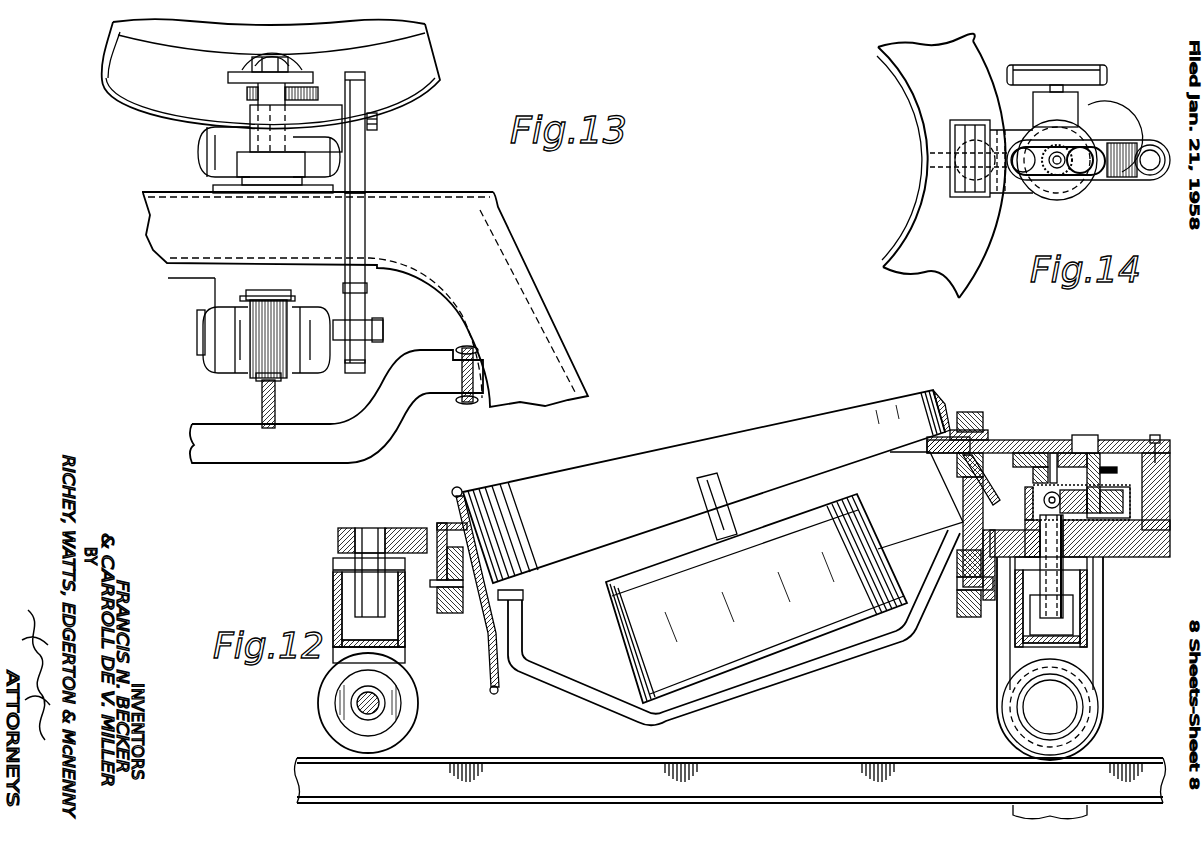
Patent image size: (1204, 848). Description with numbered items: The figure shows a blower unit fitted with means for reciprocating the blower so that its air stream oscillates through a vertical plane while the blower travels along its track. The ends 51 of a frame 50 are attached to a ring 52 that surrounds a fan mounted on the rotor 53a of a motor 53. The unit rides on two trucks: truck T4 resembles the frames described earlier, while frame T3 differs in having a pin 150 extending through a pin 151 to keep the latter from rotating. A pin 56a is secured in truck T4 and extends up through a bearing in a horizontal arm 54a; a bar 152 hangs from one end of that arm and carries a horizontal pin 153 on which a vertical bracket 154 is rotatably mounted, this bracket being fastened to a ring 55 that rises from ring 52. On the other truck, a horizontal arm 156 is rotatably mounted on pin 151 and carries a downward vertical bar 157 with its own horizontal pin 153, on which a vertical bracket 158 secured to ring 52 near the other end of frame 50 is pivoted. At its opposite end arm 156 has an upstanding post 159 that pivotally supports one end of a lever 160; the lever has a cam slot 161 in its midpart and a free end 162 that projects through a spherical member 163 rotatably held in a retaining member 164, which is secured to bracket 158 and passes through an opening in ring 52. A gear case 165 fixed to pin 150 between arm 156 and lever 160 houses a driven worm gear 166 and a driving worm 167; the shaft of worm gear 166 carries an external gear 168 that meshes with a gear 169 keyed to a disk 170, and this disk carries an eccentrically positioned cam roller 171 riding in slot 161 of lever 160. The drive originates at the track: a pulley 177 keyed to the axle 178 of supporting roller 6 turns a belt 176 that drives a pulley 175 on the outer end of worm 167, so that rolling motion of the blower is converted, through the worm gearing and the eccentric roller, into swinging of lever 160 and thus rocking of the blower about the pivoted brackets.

In FIG. 13, the supporting roller 6 is at (262, 386).
In FIG. 12, the frame 50 is at (618, 712).
In FIG. 12, the ends of frame 51 is at (503, 590).
In FIG. 13, the ring 52 is at (415, 83).
In FIG. 12, the ring 52 is at (492, 662).
In FIG. 12, the motor 53 is at (698, 630).
In FIG. 12, the rotor 53a is at (744, 478).
In FIG. 12, the horizontal arm 54a is at (338, 540).
In FIG. 12, the ring 55 is at (585, 467).
In FIG. 12, the pin 56a is at (372, 528).
In FIG. 12, the pin 150 is at (1063, 590).
In FIG. 12, the pin 151 is at (1060, 632).
In FIG. 12, the bar 152 is at (437, 527).
In FIG. 12, the horizontal pin 153 is at (437, 592).
In FIG. 12, the vertical bracket 154 is at (456, 487).
In FIG. 13, the horizontal arm 156 is at (237, 165).
In FIG. 14, the horizontal arm 156 is at (1125, 180).
In FIG. 12, the horizontal arm 156 is at (1140, 557).
In FIG. 12, the vertical bar 157 is at (990, 603).
In FIG. 12, the vertical bracket 158 is at (975, 600).
In FIG. 12, the post 159 is at (1160, 460).
In FIG. 14, the lever 160 is at (1158, 157).
In FIG. 12, the lever 160 is at (1145, 453).
In FIG. 14, the cam slot 161 is at (1023, 173).
In FIG. 12, the cam slot 161 is at (1025, 453).
In FIG. 14, the free end of lever 162 is at (938, 157).
In FIG. 12, the free end of lever 162 is at (930, 447).
In FIG. 13, the spherical member 163 is at (268, 52).
In FIG. 12, the spherical member 163 is at (980, 453).
In FIG. 12, the retaining member 164 is at (970, 412).
In FIG. 13, the gear case 165 is at (250, 118).
In FIG. 14, the gear case 165 is at (1078, 108).
In FIG. 12, the gear case 165 is at (1130, 500).
In FIG. 12, the driven worm gear 166 is at (1128, 505).
In FIG. 13, the driving worm 167 is at (377, 122).
In FIG. 12, the driving worm 167 is at (1044, 498).
In FIG. 14, the gear 168 is at (1128, 130).
In FIG. 12, the gear 168 is at (1095, 453).
In FIG. 14, the gear 169 is at (1057, 176).
In FIG. 12, the gear 169 is at (1053, 453).
In FIG. 12, the disk 170 is at (1000, 448).
In FIG. 14, the cam roller 171 is at (1090, 175).
In FIG. 12, the cam roller 171 is at (1088, 435).
In FIG. 13, the pulley 175 is at (365, 165).
In FIG. 14, the pulley 175 is at (1047, 65).
In FIG. 13, the belt 176 is at (365, 240).
In FIG. 14, the belt 176 is at (1108, 72).
In FIG. 12, the belt 176 is at (1010, 681).
In FIG. 13, the pulley 177 is at (365, 303).
In FIG. 12, the pulley 177 is at (1010, 709).
In FIG. 13, the axle 178 is at (383, 328).
In FIG. 12, the frame T3 is at (1095, 620).
In FIG. 12, the truck T4 is at (333, 600).